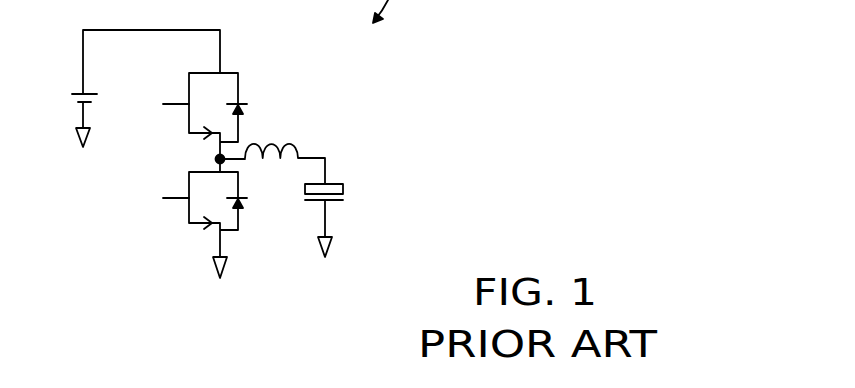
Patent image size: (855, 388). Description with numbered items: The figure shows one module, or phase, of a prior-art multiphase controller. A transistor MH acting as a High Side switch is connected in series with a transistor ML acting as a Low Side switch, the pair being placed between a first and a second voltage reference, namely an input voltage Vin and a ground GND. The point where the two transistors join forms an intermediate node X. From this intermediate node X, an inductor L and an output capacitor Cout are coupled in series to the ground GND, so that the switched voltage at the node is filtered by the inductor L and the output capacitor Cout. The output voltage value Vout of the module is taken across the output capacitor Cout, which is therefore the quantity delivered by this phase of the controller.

The input voltage Vin is at (146, 64).
The transistor MH is at (224, 97).
The transistor ML is at (203, 200).
The intermediate node X is at (216, 160).
The inductor L is at (272, 150).
The output capacitor Cout is at (301, 210).
The output voltage Vout is at (368, 232).
The ground GND is at (205, 221).